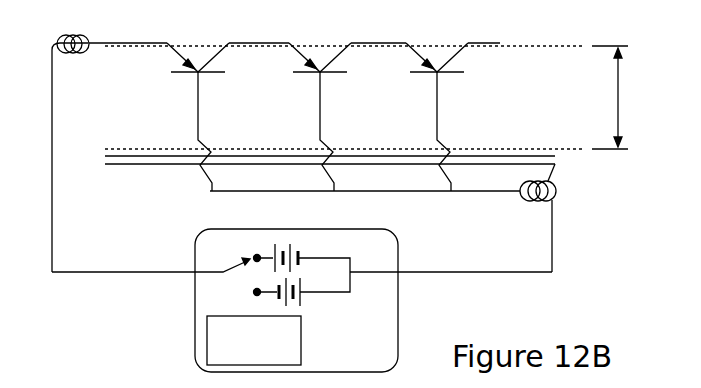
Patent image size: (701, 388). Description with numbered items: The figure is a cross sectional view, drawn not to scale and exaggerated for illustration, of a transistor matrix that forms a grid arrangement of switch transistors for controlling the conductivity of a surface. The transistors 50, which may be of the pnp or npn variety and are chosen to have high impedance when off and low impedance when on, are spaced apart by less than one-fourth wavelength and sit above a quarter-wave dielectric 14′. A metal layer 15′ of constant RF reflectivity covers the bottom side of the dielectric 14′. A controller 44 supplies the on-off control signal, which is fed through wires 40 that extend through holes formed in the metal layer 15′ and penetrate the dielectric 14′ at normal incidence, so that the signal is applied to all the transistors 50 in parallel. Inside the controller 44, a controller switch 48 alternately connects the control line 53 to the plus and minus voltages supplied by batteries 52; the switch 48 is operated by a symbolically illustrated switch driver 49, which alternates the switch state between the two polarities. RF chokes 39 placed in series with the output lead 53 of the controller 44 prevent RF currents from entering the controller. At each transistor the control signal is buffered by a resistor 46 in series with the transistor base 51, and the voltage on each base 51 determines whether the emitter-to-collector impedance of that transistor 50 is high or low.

The dielectric 14′ is at (525, 68).
The metal layer 15′ is at (135, 167).
The RF chokes 39 is at (82, 43).
The wires 40 is at (196, 106).
The resistor 46 is at (200, 184).
The transistors 50 is at (198, 58).
The transistor base 51 is at (447, 76).
The control line 53 is at (489, 271).
The controller 44 is at (398, 298).
The controller switch 48 is at (246, 280).
The batteries 52 is at (300, 291).
The switch driver 49 is at (301, 340).